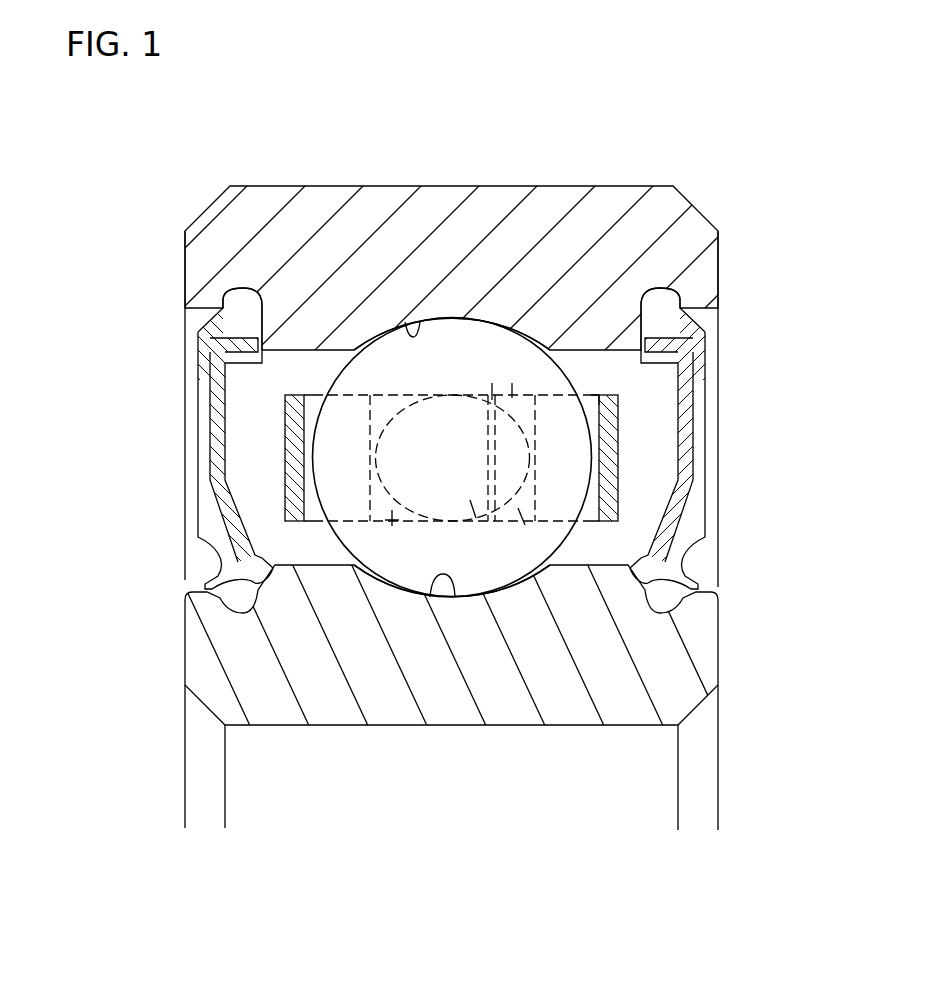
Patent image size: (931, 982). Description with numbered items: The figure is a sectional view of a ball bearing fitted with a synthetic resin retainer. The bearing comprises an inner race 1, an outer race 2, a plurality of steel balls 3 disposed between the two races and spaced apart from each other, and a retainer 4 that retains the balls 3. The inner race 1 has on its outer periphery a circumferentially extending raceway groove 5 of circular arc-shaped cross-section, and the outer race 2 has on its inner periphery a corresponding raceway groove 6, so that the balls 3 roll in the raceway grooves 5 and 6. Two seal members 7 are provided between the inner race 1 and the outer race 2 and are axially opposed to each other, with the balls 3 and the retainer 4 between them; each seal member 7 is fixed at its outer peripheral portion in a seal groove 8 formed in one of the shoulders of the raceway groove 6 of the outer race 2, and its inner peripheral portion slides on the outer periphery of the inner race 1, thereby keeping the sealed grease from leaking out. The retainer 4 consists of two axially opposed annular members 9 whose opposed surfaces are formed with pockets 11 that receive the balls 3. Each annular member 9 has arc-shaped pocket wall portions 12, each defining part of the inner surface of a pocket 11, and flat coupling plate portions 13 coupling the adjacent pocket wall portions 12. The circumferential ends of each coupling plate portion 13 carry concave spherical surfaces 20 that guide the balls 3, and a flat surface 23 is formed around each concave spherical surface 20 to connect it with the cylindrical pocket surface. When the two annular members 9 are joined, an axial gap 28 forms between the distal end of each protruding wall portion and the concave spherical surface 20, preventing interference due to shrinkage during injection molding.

The inner race 1 is at (198, 633).
The outer race 2 is at (198, 265).
The balls 3 is at (343, 384).
The retainer 4 is at (284, 435).
The raceway groove 5 is at (427, 578).
The raceway groove 6 is at (411, 330).
The seal members 7 is at (200, 460).
The seal groove 8 is at (255, 288).
The annular members 9 is at (283, 480).
The pockets 11 is at (593, 403).
The pocket wall portions 12 is at (613, 438).
The coupling plate portions 13 is at (512, 385).
The concave spherical surfaces 20 is at (472, 505).
The flat surface 23 is at (391, 520).
The axial gap 28 is at (491, 390).